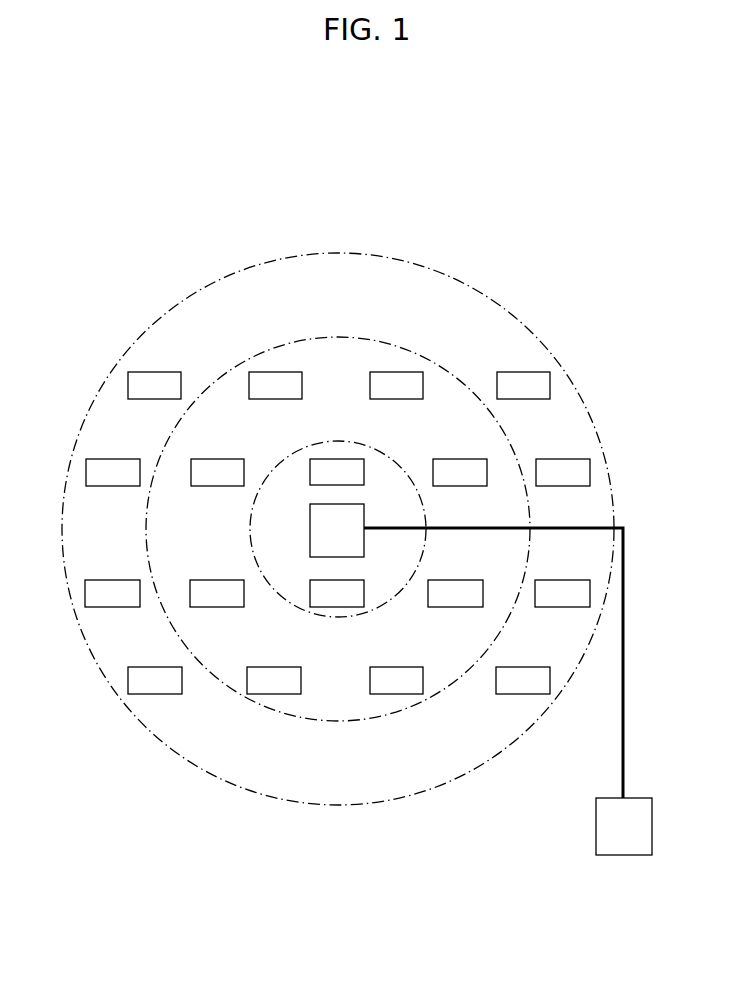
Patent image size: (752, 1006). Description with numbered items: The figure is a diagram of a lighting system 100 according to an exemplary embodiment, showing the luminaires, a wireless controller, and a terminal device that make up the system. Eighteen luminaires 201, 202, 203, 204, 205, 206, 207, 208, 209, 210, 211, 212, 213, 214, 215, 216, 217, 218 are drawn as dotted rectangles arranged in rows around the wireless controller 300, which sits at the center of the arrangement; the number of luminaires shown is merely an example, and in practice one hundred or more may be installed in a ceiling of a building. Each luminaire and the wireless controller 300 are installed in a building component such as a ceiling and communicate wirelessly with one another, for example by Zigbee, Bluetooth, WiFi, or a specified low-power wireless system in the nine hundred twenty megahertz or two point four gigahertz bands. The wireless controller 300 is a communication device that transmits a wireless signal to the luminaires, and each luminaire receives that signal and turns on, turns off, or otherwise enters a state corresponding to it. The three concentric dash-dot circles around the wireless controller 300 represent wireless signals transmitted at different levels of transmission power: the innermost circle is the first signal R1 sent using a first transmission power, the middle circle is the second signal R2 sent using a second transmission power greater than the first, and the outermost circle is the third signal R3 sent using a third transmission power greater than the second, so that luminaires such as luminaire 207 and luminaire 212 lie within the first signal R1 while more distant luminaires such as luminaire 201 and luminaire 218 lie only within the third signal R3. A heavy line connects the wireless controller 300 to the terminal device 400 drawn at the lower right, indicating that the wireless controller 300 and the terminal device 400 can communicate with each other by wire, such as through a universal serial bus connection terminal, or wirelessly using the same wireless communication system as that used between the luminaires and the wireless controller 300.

The lighting system 100 is at (610, 250).
The luminaire 201 is at (137, 381).
The luminaire 202 is at (275, 381).
The luminaire 203 is at (408, 378).
The luminaire 204 is at (505, 383).
The luminaire 205 is at (131, 455).
The luminaire 206 is at (232, 456).
The luminaire 207 is at (334, 466).
The luminaire 208 is at (474, 456).
The luminaire 209 is at (566, 456).
The luminaire 210 is at (94, 590).
The luminaire 211 is at (198, 590).
The luminaire 212 is at (357, 590).
The luminaire 213 is at (453, 590).
The luminaire 214 is at (547, 590).
The luminaire 215 is at (138, 680).
The luminaire 216 is at (263, 680).
The luminaire 217 is at (387, 680).
The luminaire 218 is at (520, 680).
The wireless controller 300 is at (357, 522).
The terminal device 400 is at (640, 807).
The first signal R1 is at (395, 463).
The second signal R2 is at (437, 362).
The third signal R3 is at (485, 296).